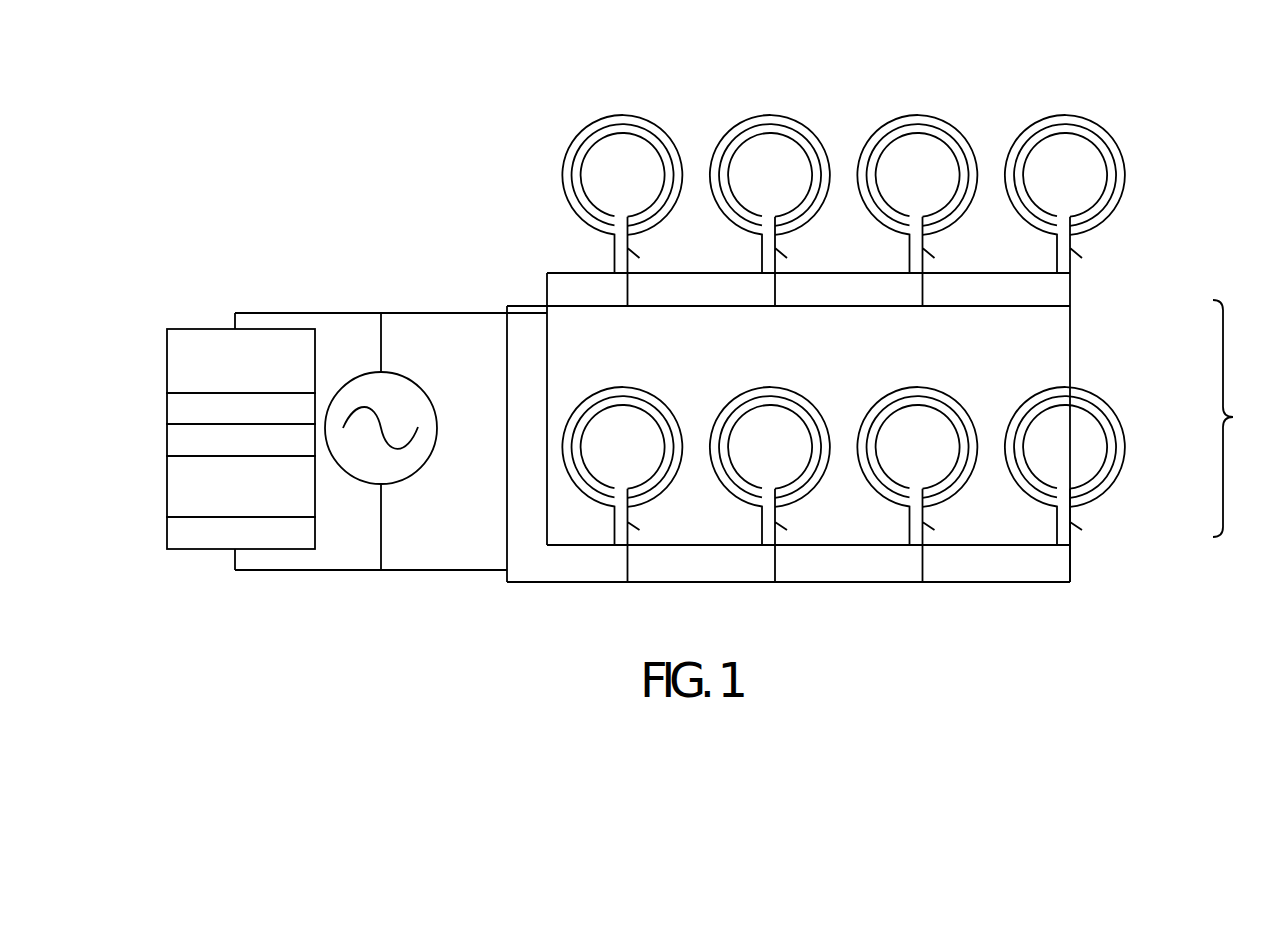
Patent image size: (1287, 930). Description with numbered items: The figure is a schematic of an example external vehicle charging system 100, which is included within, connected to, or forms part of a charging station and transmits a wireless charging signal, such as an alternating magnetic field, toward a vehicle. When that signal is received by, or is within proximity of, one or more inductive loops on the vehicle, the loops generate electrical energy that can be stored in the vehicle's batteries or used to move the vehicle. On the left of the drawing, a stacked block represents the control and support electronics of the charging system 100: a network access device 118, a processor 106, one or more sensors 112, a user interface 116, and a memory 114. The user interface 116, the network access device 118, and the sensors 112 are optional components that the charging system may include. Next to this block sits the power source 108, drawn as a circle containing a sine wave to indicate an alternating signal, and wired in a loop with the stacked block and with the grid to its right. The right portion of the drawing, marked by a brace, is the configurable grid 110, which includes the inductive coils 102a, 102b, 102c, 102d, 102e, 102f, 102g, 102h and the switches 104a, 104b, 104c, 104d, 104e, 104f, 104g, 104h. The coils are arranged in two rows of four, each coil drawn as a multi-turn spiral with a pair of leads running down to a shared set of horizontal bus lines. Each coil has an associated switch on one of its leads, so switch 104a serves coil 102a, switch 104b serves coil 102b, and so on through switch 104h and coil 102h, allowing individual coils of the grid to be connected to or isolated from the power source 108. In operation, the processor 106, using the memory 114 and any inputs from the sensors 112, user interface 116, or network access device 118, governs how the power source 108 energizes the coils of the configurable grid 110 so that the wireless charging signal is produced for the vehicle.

The external vehicle charging system 100 is at (255, 148).
The inductive coil 102a is at (622, 159).
The inductive coil 102b is at (770, 159).
The inductive coil 102c is at (917, 159).
The inductive coil 102d is at (1065, 159).
The inductive coil 102e is at (622, 430).
The inductive coil 102f is at (770, 430).
The inductive coil 102g is at (917, 430).
The inductive coil 102h is at (1065, 430).
The switch 104a is at (668, 261).
The switch 104b is at (815, 261).
The switch 104c is at (963, 261).
The switch 104d is at (1110, 261).
The switch 104e is at (668, 535).
The switch 104f is at (816, 535).
The switch 104g is at (963, 535).
The switch 104h is at (1110, 535).
The processor 106 is at (168, 408).
The power source 108 is at (428, 400).
The configurable grid 110 is at (1242, 418).
The sensors 112 is at (168, 440).
The memory 114 is at (168, 532).
The user interface 116 is at (168, 488).
The network access device 118 is at (168, 358).